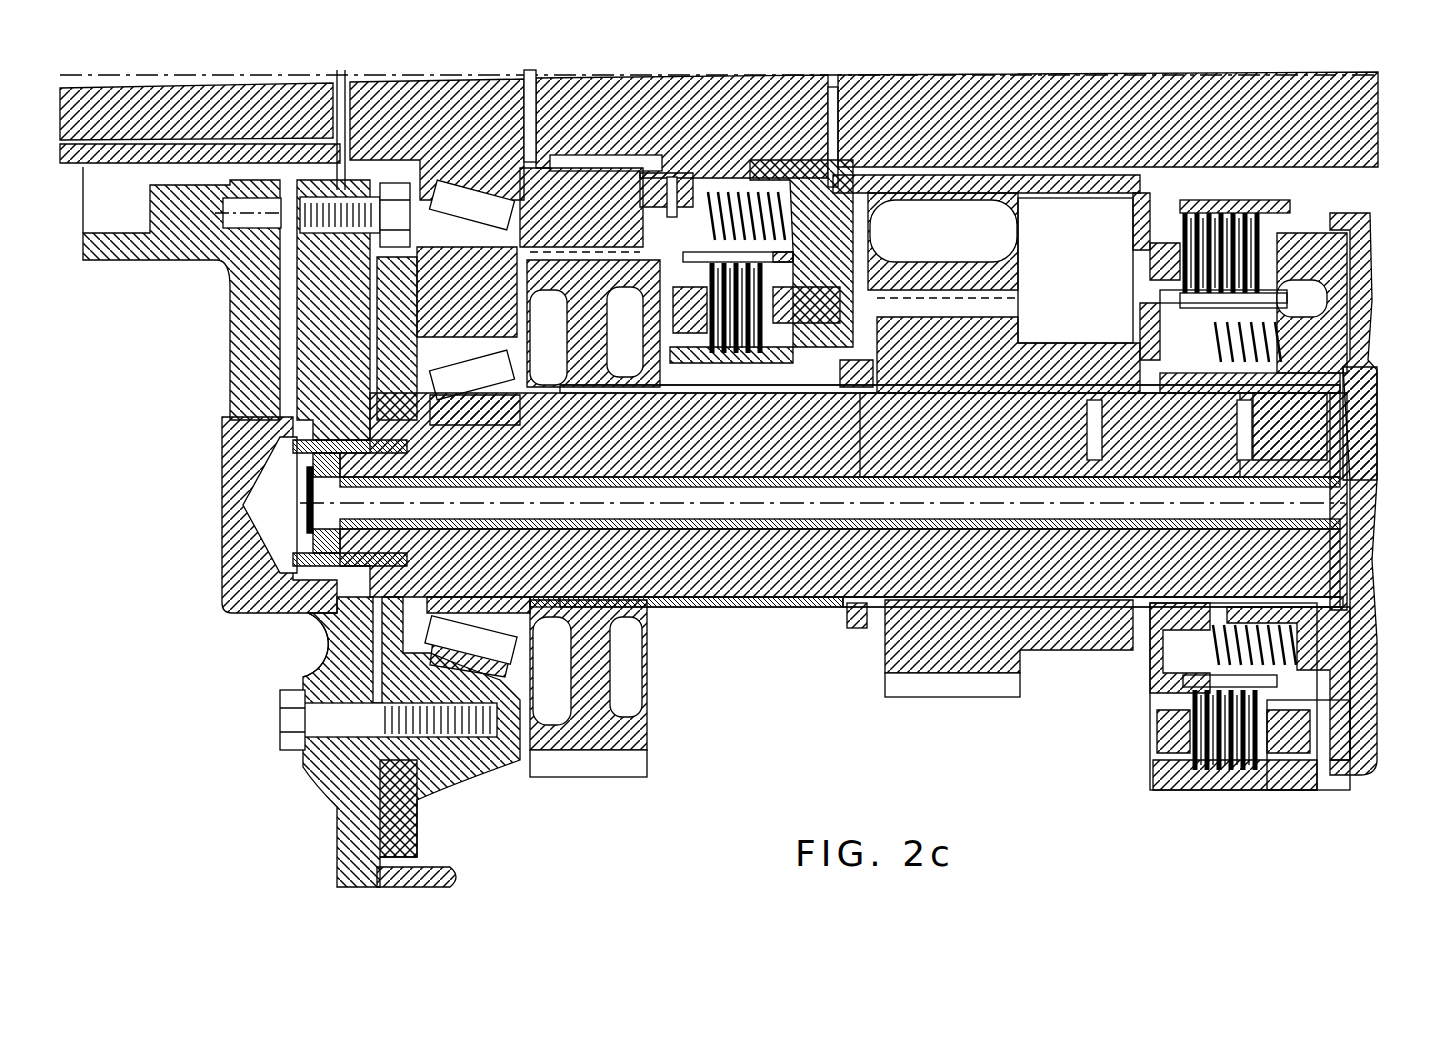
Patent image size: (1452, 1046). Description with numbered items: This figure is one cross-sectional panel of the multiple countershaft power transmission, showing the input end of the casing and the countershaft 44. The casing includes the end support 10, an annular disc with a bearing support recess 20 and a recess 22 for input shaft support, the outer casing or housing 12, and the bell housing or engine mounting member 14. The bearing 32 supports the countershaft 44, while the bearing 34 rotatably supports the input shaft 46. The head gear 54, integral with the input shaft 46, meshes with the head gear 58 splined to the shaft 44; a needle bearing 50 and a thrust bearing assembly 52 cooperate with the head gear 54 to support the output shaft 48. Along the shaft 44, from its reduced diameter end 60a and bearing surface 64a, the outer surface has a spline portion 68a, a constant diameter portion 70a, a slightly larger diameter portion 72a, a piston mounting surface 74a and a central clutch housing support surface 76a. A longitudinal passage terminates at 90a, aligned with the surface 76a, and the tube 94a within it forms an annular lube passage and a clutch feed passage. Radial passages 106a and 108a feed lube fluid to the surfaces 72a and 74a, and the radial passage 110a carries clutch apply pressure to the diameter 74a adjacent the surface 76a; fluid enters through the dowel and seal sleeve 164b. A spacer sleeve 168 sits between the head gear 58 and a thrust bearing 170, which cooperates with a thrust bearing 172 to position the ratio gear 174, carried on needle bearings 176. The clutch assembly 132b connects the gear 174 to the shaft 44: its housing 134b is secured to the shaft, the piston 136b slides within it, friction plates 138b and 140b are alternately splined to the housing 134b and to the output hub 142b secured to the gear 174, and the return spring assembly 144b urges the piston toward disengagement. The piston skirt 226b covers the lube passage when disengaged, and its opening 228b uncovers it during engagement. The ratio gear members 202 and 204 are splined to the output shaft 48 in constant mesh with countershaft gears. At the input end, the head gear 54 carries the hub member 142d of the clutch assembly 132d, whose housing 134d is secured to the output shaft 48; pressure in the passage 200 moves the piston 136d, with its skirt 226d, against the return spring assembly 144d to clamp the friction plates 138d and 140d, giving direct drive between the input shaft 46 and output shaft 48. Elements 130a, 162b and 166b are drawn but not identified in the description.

The end support 10 is at (400, 805).
The outer casing 12 is at (440, 880).
The bell housing 14 is at (340, 820).
The bearing support recess 20 is at (490, 742).
The recess 22 is at (440, 250).
The bearing 32 is at (545, 648).
The bearing 34 is at (470, 195).
The countershaft 44 is at (740, 612).
The input shaft 46 is at (445, 110).
The output shaft 48 is at (1245, 110).
The needle bearing 50 is at (600, 160).
The thrust bearing assembly 52 is at (535, 150).
The head gear 54 is at (490, 270).
The head gear 58 is at (603, 762).
The reduced diameter end 60a is at (318, 635).
The bearing surface 64a is at (822, 495).
The spline portion 68a is at (575, 385).
The constant diameter portion 70a is at (790, 310).
The slightly larger diameter portion 72a is at (1050, 452).
The piston mounting surface 74a is at (1310, 340).
The central clutch housing support surface 76a is at (1355, 360).
The passage termination 90a is at (1360, 540).
The tube 94a is at (695, 608).
The radially extending fluid passage 106a is at (1100, 380).
The radially extending fluid passage 108a is at (1335, 480).
The radial passage 110a is at (1330, 420).
The shaft bore 130a is at (1236, 442).
The clutch assembly 132d is at (950, 449).
The housing 134d is at (950, 546).
The piston 136d is at (830, 175).
The friction plates 138d is at (720, 310).
The friction plates 140d is at (690, 256).
The hub member 142d is at (600, 232).
The return spring assembly 144d is at (700, 172).
The hub sleeve 162b is at (325, 415).
The dowel and seal sleeve 164b is at (235, 590).
The washer 166b is at (300, 490).
The spacer sleeve 168 is at (760, 608).
The thrust bearing 170 is at (855, 618).
The thrust bearing 172 is at (1180, 295).
The ratio gear 174 is at (915, 692).
The needle bearings 176 is at (1020, 340).
The passage 200 is at (835, 120).
The ratio gear member 202 is at (945, 180).
The ratio gear member 204 is at (1090, 180).
The inner skirt portion 226d is at (740, 192).
The opening 228b is at (1290, 285).
The inner skirt portion 226b is at (1275, 628).
The clutch assembly 132b is at (1125, 782).
The housing 134b is at (1340, 790).
The piston 136b is at (1292, 792).
The friction plates 138b is at (1230, 772).
The friction plates 140b is at (1185, 688).
The output hub 142b is at (1150, 665).
The return spring assembly 144b is at (1310, 650).